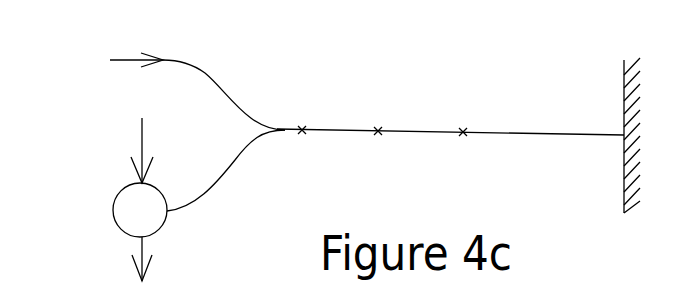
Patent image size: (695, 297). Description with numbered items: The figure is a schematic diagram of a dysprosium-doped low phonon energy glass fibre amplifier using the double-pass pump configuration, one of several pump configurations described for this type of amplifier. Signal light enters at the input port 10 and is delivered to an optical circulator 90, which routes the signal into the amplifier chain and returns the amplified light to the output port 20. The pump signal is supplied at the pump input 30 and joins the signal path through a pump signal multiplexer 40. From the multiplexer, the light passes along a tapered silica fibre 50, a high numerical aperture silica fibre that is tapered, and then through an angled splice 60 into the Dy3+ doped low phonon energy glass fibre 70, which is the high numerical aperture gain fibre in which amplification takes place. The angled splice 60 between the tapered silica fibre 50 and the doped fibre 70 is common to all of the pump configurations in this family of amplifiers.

The input port 10 is at (142, 134).
The output port 20 is at (142, 243).
The pump input 30 is at (187, 60).
The pump signal multiplexer 40 is at (299, 113).
The tapered silica fibre 50 is at (379, 113).
The angled splice 60 is at (464, 114).
The Dy3+ doped low phonon energy glass fibre 70 is at (543, 135).
The optical circulator 90 is at (113, 202).